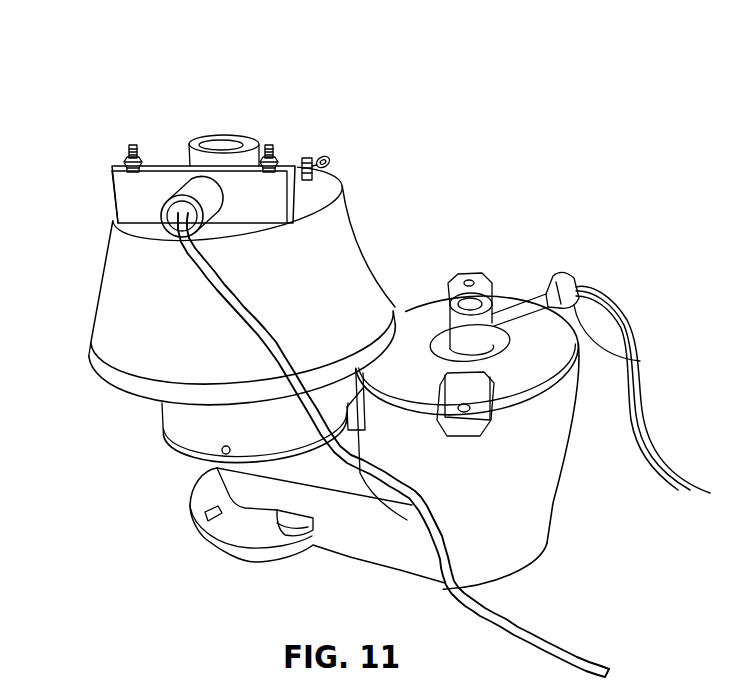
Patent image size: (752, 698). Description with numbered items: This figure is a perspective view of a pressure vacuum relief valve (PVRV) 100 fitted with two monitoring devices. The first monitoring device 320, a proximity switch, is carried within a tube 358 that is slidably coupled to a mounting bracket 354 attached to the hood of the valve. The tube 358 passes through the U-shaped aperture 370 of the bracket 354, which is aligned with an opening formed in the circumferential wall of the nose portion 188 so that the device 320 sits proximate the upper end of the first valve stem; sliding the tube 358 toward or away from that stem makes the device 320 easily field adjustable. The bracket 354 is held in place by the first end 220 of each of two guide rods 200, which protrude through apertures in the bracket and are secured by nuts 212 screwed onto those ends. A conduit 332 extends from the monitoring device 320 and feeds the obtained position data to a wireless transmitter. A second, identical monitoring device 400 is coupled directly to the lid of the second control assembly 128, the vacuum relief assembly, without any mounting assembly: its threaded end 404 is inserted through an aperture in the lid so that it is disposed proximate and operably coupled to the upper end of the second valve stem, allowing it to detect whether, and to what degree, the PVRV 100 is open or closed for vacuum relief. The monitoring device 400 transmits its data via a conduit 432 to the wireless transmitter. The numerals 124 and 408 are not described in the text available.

The pressure vacuum relief valve (PVRV) 100 is at (535, 130).
The sensor housing assembly 124 is at (387, 235).
The second control assembly 128 is at (578, 432).
The nose portion 188 is at (228, 135).
The guide rods 200 is at (123, 163).
The nuts 212 is at (138, 163).
The first end 220 is at (176, 92).
The monitoring device 320 is at (133, 232).
The conduit 332 is at (130, 333).
The mounting bracket 354 is at (128, 197).
The tube 358 is at (192, 187).
The U-shaped aperture 370 is at (223, 207).
The monitoring device 400 is at (575, 260).
The threaded end 404 is at (503, 276).
The wire lead 408 is at (630, 360).
The conduit 432 is at (595, 290).